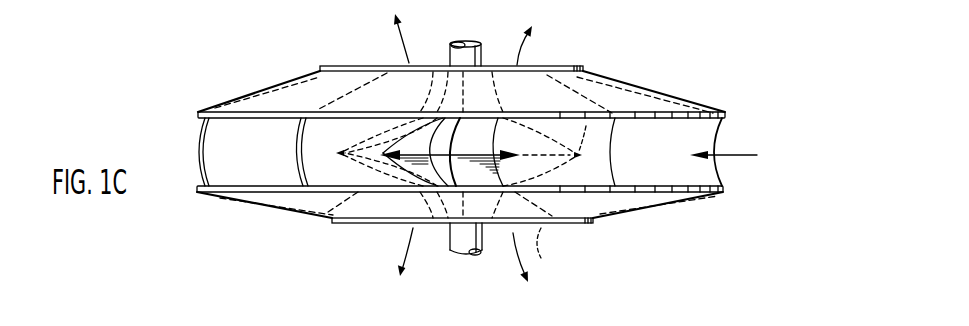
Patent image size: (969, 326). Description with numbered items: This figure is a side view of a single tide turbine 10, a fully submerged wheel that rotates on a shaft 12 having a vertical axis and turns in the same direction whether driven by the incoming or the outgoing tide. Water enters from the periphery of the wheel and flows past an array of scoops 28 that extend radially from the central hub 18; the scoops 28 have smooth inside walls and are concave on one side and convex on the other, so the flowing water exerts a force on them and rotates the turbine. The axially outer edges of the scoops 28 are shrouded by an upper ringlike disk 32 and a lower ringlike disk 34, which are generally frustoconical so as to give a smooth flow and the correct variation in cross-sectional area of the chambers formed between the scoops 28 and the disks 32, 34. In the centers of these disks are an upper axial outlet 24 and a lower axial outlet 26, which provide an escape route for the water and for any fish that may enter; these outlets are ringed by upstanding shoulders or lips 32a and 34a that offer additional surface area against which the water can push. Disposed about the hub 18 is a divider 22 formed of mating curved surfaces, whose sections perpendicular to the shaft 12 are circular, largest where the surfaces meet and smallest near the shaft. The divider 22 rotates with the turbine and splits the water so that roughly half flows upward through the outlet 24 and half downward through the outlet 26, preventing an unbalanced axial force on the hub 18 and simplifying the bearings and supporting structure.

The tide turbine 10 is at (236, 82).
The shaft 12 is at (449, 45).
The central hub 18 is at (486, 67).
The divider 22 is at (490, 155).
The upper axial outlet 24 is at (392, 67).
The lower axial outlet 26 is at (551, 245).
The scoops 28 is at (197, 153).
The upper ringlike disk 32 is at (647, 103).
The upper upstanding shoulder or lip 32a is at (584, 70).
The lower ringlike disk 34 is at (640, 210).
The lower upstanding shoulder or lip 34a is at (593, 224).